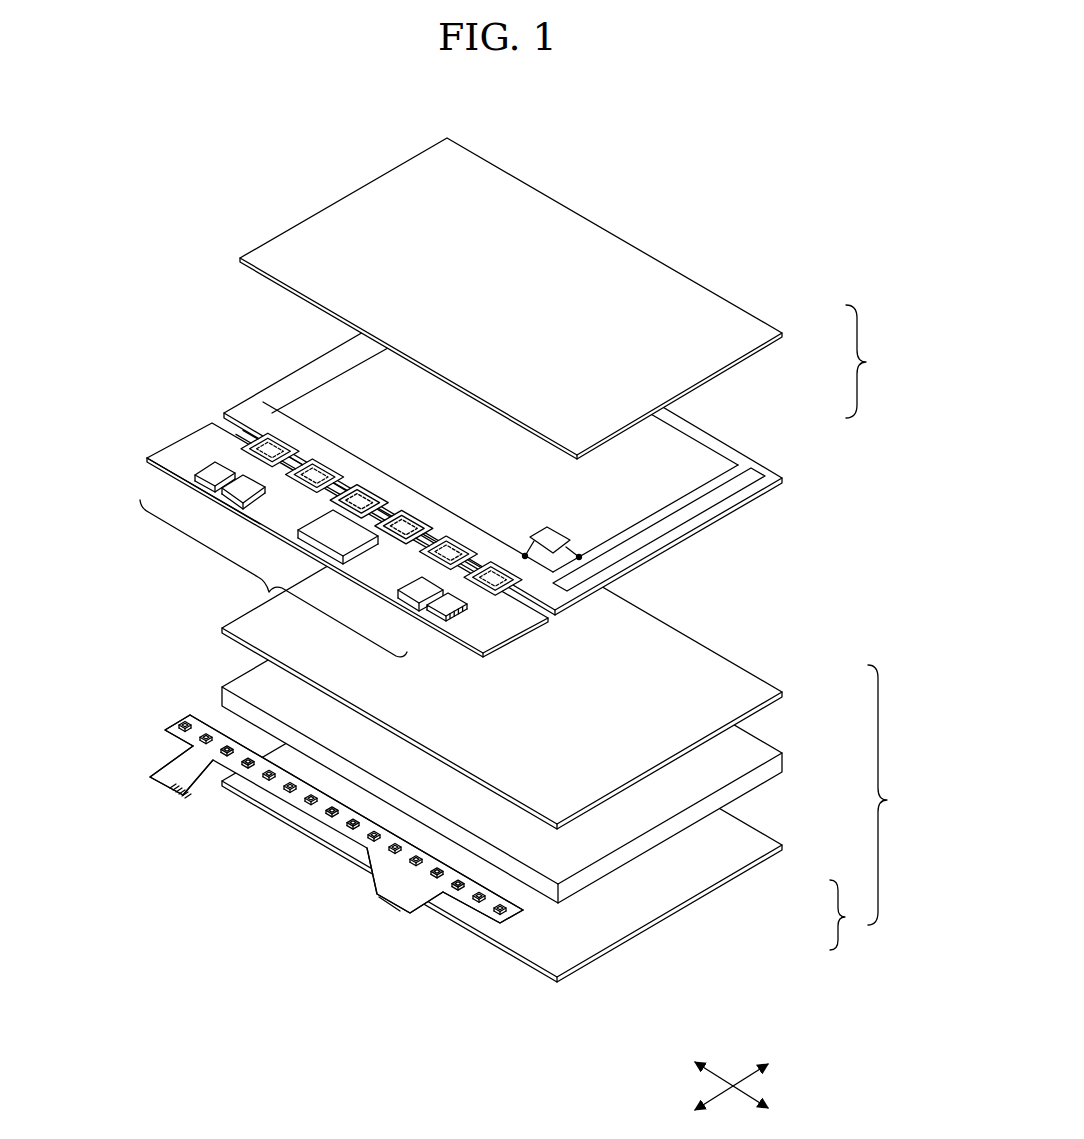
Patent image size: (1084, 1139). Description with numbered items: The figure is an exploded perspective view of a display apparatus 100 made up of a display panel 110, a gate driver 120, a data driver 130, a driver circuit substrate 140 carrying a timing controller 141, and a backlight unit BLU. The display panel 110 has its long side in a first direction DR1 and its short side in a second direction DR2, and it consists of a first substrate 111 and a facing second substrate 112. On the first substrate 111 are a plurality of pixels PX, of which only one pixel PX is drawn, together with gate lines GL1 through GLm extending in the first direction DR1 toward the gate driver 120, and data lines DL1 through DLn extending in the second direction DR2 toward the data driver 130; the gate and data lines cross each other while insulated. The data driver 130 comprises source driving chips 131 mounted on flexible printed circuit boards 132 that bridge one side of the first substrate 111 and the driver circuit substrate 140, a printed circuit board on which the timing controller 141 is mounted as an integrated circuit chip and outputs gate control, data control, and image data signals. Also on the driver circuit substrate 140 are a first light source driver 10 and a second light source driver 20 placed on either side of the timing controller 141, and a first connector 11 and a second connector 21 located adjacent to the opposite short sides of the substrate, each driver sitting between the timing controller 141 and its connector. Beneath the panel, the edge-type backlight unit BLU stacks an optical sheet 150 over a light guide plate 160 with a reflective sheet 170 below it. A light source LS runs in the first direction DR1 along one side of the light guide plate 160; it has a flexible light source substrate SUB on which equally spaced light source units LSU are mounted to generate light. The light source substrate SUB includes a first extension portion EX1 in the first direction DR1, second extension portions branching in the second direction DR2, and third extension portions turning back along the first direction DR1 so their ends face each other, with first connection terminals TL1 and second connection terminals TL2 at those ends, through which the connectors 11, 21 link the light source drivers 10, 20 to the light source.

The display apparatus 100 is at (676, 210).
The display panel 110 is at (875, 361).
The first substrate 111 is at (731, 458).
The second substrate 112 is at (766, 328).
The gate driver 120 is at (756, 476).
The data driver 130 is at (321, 527).
The source driving chip 131 is at (272, 437).
The flexible printed circuit board 132 is at (290, 442).
The driver circuit substrate 140 is at (181, 453).
The timing controller 141 is at (193, 481).
The first light source driver 10 is at (231, 494).
The first connector 11 is at (203, 482).
The second light source driver 20 is at (401, 602).
The second connector 21 is at (433, 613).
The optical sheet 150 is at (753, 690).
The light guide plate 160 is at (753, 750).
The reflective sheet 170 is at (753, 843).
The backlight unit BLU is at (533, 712).
The light source LS is at (849, 915).
The light source unit LSU is at (514, 912).
The light source substrate SUB is at (502, 922).
The first extension portion EX1 is at (317, 816).
The first connection terminal TL1 is at (179, 797).
The second connection terminal TL2 is at (382, 905).
The gate line GL1 is at (404, 484).
The gate line GLm is at (665, 440).
The data line DL1 is at (642, 520).
The data line DLn is at (341, 378).
The pixel PX is at (552, 543).
The first direction DR1 is at (754, 1093).
The second direction DR2 is at (754, 1084).